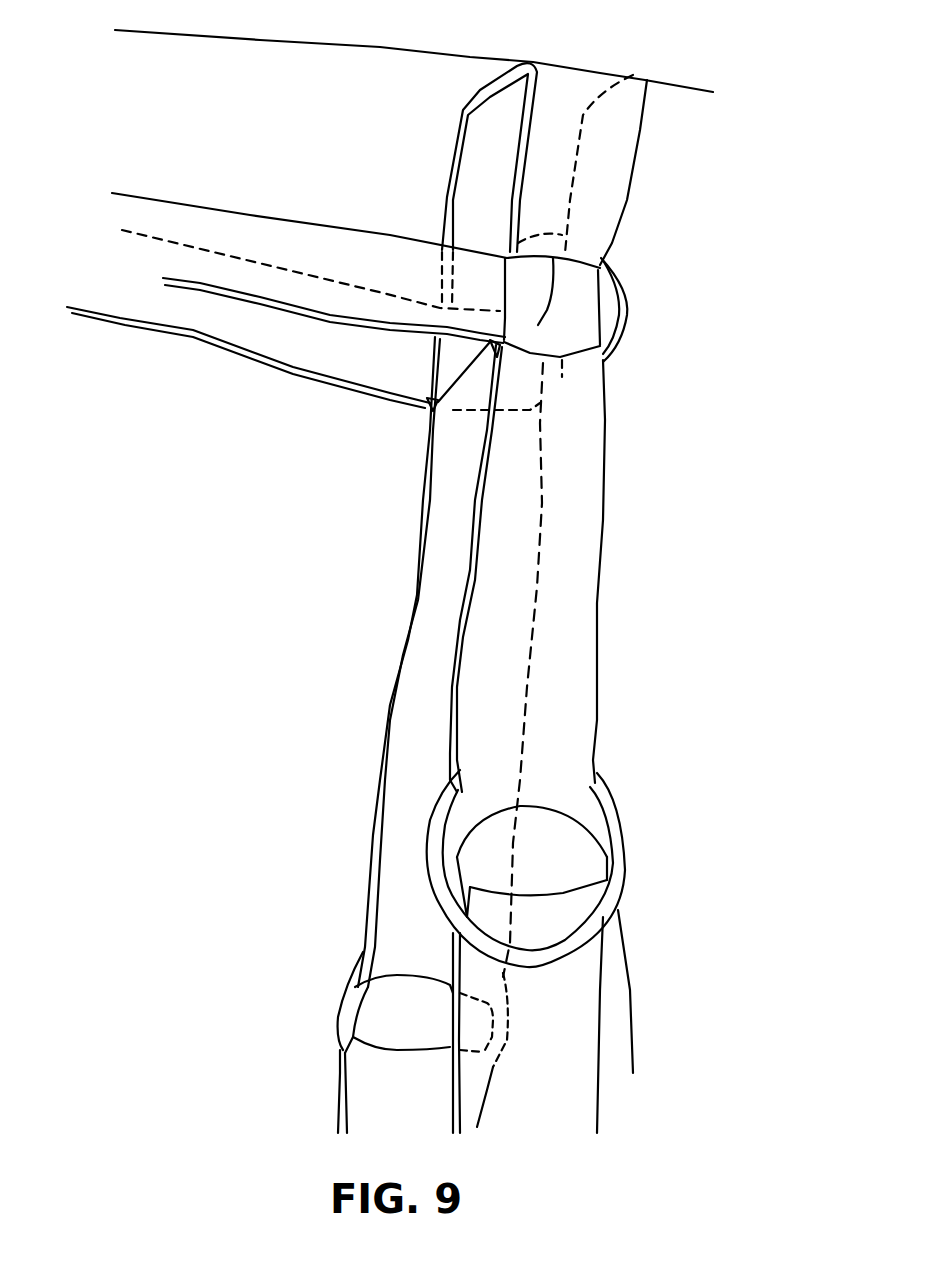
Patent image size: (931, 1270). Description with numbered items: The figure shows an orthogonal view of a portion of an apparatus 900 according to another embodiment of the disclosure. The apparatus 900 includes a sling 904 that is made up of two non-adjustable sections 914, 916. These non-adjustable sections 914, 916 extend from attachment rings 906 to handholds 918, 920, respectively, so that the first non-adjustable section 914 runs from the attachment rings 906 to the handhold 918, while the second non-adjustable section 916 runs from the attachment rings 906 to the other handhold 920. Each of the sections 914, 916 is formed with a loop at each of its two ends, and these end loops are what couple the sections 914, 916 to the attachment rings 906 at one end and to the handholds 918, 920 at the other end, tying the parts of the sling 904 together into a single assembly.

The apparatus 900 is at (687, 50).
The sling 904 is at (677, 493).
The attachment rings 906 is at (625, 293).
The non-adjustable section 914 is at (473, 553).
The non-adjustable section 916 is at (417, 605).
The handhold 918 is at (620, 810).
The handhold 920 is at (333, 1017).